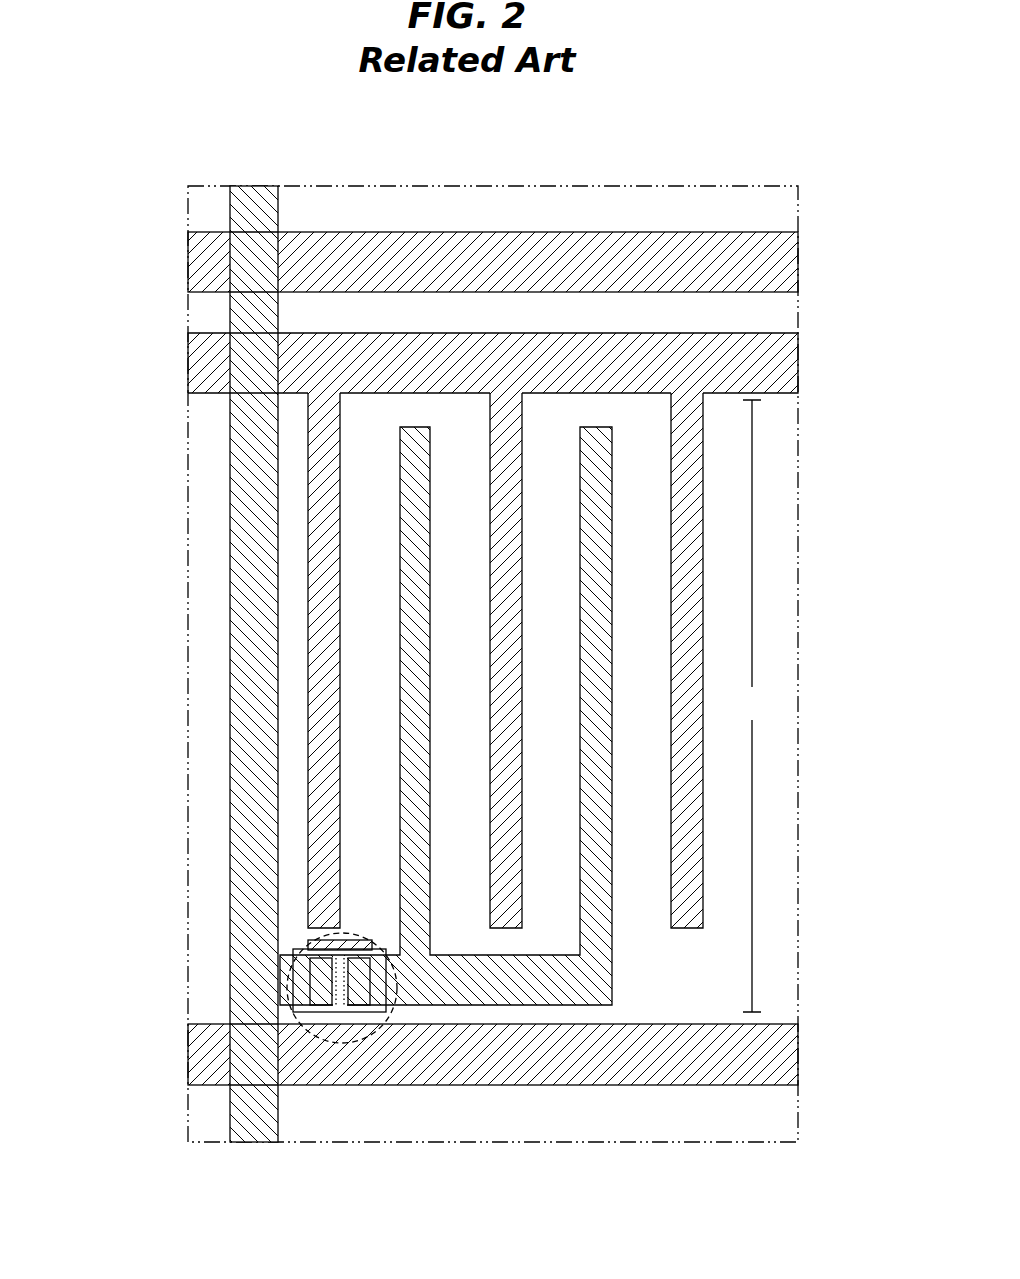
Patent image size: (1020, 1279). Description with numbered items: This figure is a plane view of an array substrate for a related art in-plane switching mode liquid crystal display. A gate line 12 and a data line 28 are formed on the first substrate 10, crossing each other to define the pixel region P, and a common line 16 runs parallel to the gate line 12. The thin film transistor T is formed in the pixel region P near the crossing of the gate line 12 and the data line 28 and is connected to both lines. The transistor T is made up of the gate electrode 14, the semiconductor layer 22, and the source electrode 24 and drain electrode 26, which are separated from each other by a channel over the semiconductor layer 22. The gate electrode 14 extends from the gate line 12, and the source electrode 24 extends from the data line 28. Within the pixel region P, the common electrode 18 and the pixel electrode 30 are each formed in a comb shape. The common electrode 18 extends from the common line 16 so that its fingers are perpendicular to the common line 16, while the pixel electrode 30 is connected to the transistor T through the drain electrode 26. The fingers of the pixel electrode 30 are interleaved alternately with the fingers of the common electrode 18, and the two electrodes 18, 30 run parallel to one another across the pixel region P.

The first substrate 10 is at (737, 1120).
The gate line 12 is at (805, 232).
The gate electrode 14 is at (367, 940).
The common line 16 is at (805, 333).
The common electrode 18 is at (308, 569).
The semiconductor layer 22 is at (352, 1038).
The source electrode 24 is at (320, 1036).
The drain electrode 26 is at (378, 1016).
The data line 28 is at (230, 155).
The pixel electrode 30 is at (398, 456).
The thin film transistor T is at (292, 988).
The pixel region P is at (752, 706).